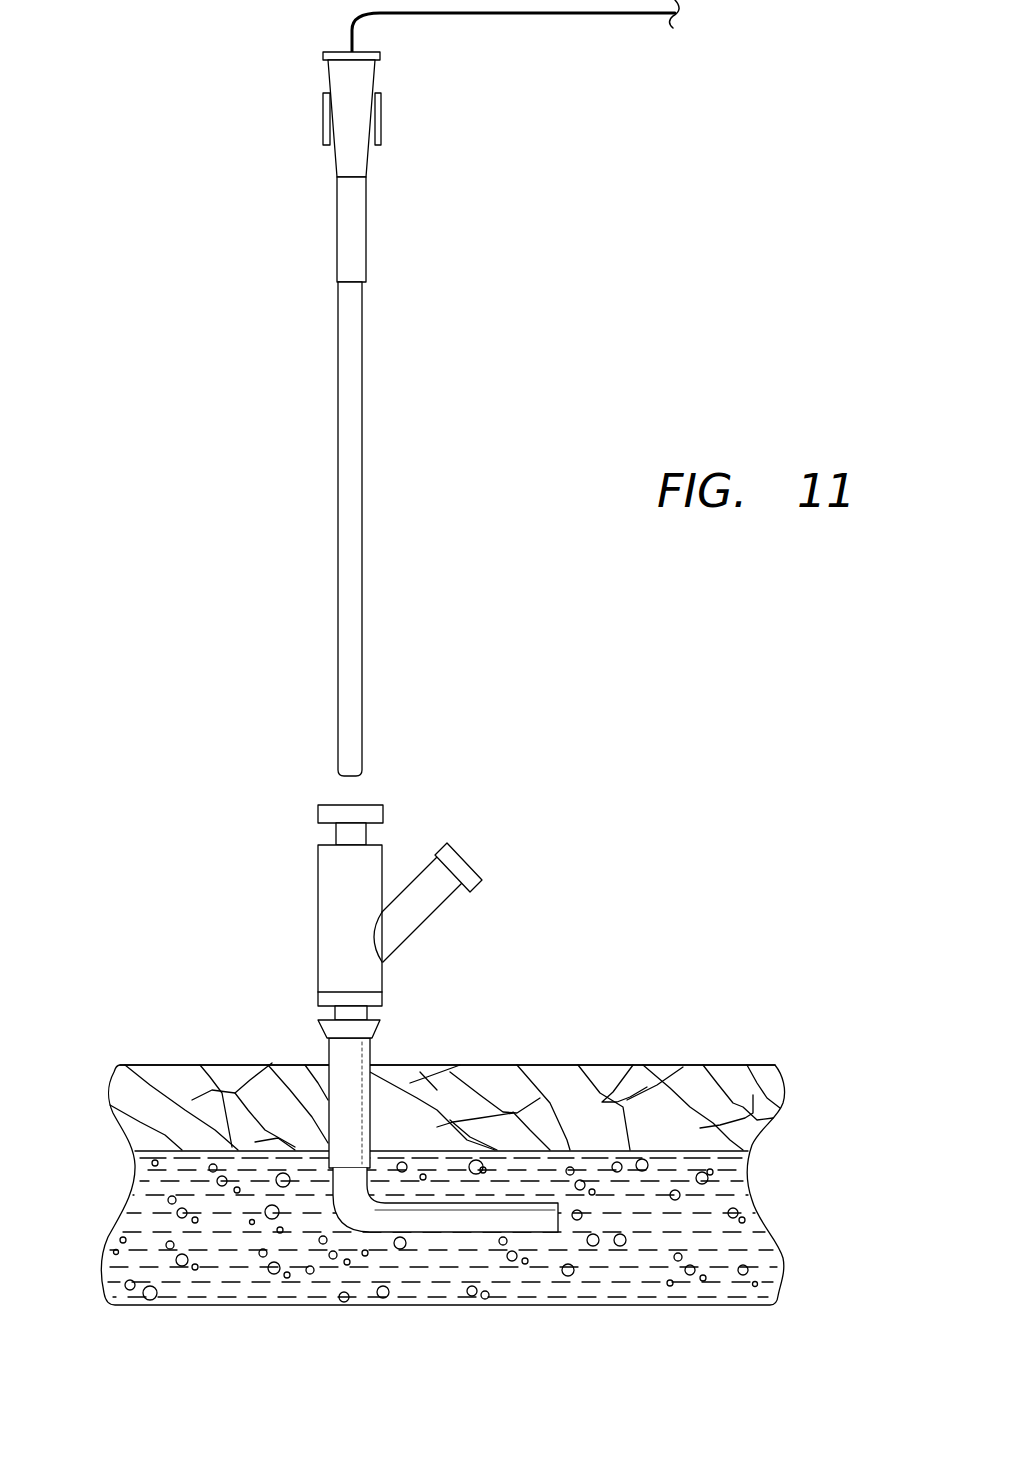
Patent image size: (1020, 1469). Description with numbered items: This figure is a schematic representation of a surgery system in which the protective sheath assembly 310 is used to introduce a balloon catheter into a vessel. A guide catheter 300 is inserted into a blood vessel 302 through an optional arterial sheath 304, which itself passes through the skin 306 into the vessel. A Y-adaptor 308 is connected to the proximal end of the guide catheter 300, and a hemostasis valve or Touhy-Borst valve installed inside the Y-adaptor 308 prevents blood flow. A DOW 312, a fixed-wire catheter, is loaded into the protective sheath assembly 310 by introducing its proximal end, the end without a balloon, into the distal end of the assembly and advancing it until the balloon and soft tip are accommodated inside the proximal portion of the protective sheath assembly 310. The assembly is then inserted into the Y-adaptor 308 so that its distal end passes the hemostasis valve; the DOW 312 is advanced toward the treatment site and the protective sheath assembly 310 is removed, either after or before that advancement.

The guide catheter 300 is at (470, 1252).
The blood vessel 302 is at (663, 1266).
The arterial sheath 304 is at (345, 1072).
The skin 306 is at (430, 1077).
The Y-adaptor 308 is at (318, 898).
The protective sheath assembly 310 is at (385, 222).
The DOW 312 is at (545, 18).